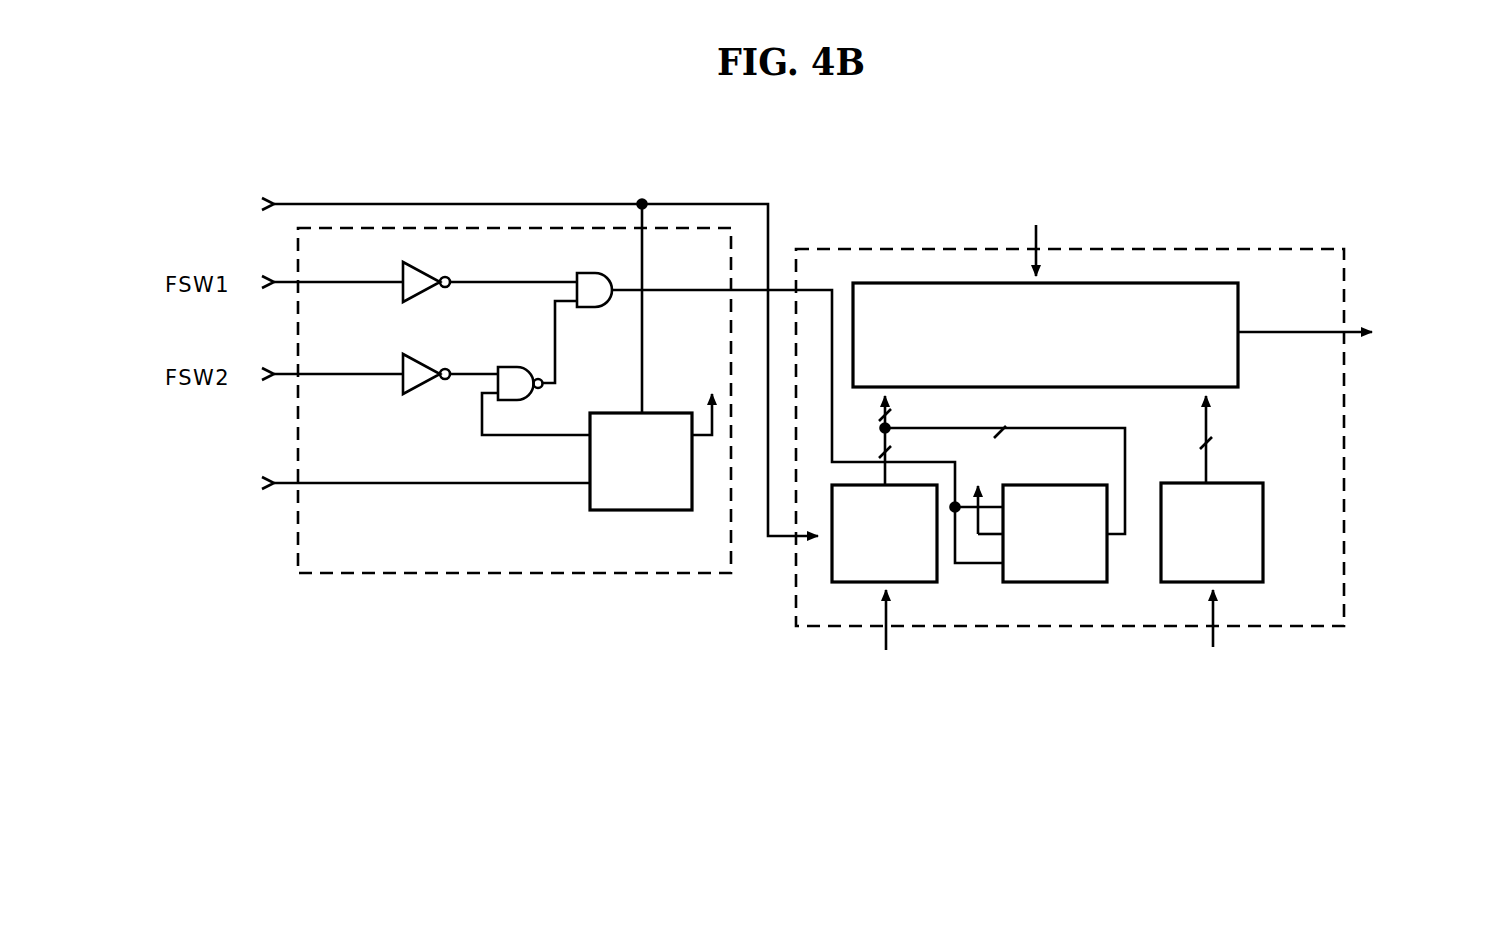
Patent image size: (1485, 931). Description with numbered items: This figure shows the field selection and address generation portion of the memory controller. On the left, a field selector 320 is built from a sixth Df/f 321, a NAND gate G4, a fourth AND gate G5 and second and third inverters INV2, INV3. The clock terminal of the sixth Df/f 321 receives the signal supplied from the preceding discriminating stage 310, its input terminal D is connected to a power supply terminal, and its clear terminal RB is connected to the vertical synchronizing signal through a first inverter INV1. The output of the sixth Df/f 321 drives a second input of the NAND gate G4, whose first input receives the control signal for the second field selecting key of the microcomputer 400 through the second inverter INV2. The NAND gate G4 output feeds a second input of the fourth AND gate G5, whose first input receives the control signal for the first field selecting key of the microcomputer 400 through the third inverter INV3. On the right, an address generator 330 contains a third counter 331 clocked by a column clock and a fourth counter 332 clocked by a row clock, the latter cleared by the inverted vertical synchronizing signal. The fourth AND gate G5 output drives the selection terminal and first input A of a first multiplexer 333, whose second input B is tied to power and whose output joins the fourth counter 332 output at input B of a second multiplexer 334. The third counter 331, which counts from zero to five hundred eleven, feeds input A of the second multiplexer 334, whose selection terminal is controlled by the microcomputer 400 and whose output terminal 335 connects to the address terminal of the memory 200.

The field selector 320 is at (580, 573).
The sixth Df/f 321 is at (615, 510).
The address generator 330 is at (798, 617).
The third counter 331 is at (1263, 565).
The fourth counter 332 is at (933, 582).
The first multiplexer 333 is at (1085, 582).
The second multiplexer 334 is at (1238, 297).
The output terminal of the second multiplexer 335 is at (1290, 332).
The E/O discriminator 310 is at (346, 484).
The microcomputer 400 is at (1028, 210).
The memory 200 is at (1433, 349).
The first inverter INV1 is at (460, 367).
The second inverter INV2 is at (424, 392).
The third inverter INV3 is at (418, 297).
The NAND gate G4 is at (532, 400).
The fourth AND gate G5 is at (604, 307).